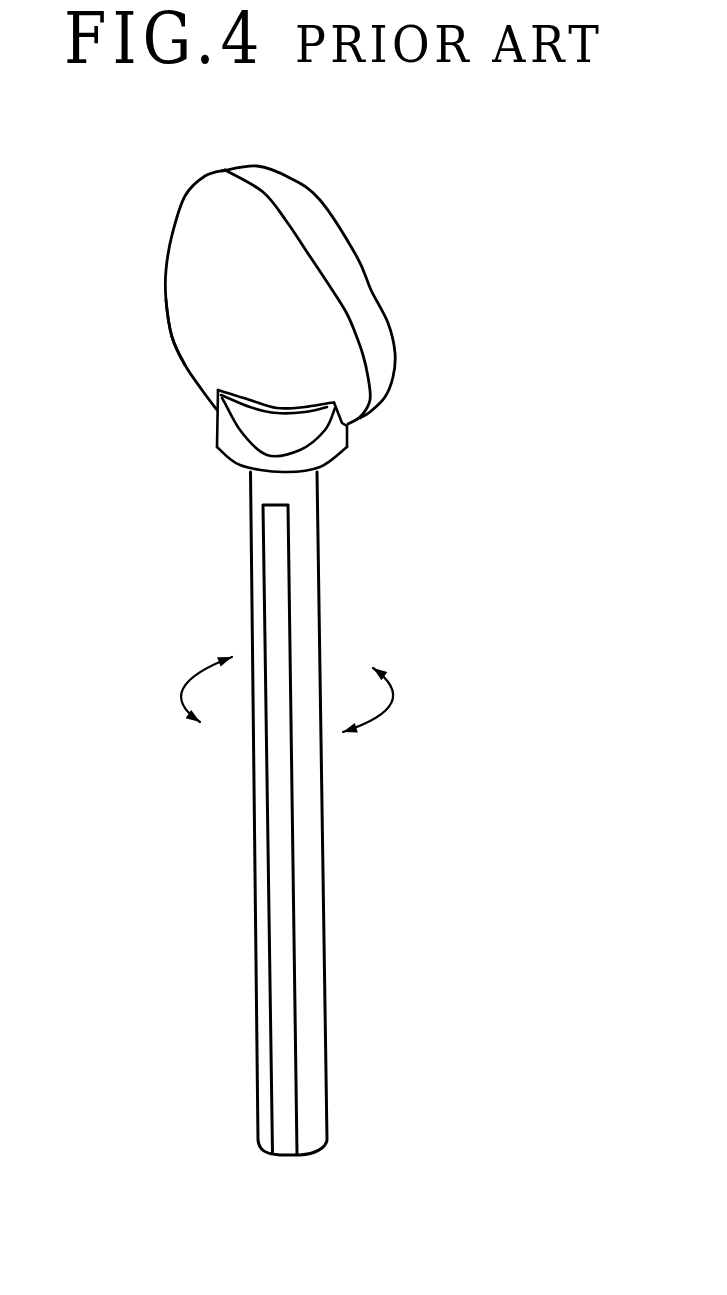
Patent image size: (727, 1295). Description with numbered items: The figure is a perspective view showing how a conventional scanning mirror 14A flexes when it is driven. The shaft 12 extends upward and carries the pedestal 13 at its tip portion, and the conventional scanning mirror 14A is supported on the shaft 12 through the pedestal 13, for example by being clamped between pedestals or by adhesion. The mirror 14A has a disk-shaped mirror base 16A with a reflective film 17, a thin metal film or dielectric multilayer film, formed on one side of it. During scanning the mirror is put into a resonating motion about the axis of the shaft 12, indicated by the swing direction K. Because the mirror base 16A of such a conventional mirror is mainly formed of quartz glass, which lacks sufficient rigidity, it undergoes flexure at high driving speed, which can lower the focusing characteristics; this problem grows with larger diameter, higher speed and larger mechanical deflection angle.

The shaft 12 is at (323, 865).
The pedestal 13 is at (327, 450).
The conventional scanning mirror 14A is at (328, 327).
The mirror base 16A is at (178, 247).
The reflective film 17 is at (183, 342).
The swing direction K is at (178, 690).